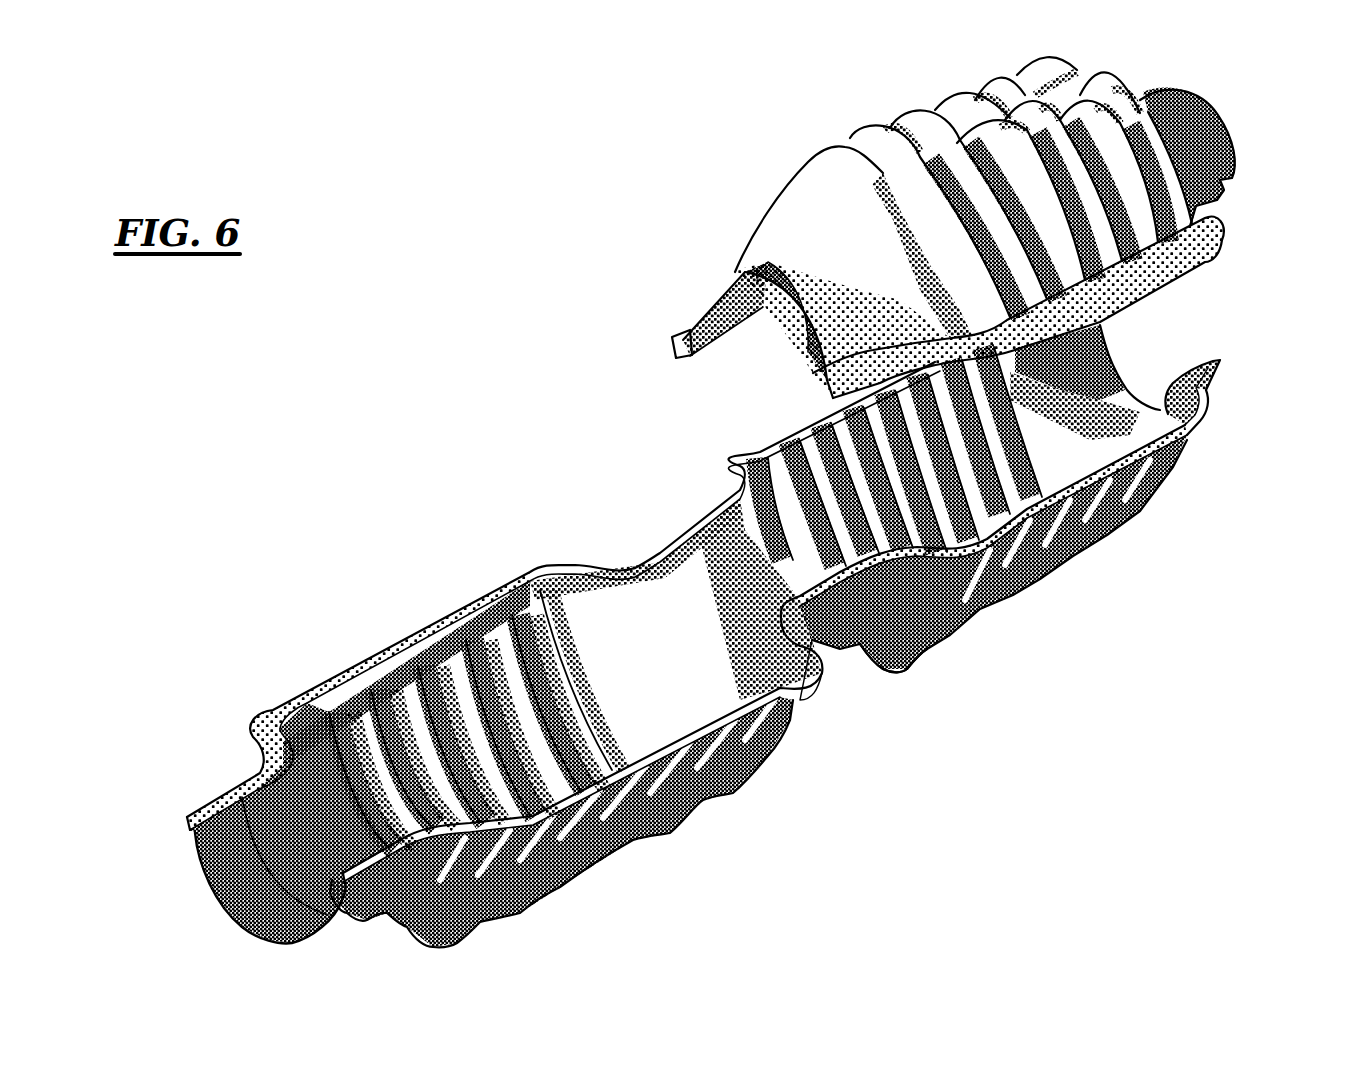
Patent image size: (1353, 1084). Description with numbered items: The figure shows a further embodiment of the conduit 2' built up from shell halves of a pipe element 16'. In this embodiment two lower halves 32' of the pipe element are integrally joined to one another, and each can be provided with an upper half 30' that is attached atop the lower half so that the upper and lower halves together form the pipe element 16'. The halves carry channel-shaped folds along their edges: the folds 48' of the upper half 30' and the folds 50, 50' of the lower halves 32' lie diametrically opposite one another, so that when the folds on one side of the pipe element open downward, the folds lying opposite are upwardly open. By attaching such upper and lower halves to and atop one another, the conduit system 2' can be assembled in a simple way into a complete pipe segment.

The conduit system 2' is at (753, 502).
The upper half of the pipe element 30' is at (931, 227).
The lower half of the pipe element 32' is at (753, 636).
The fold 48' is at (931, 307).
The fold 50 is at (358, 685).
The fold 50' is at (1059, 483).
The pipe element 16' is at (893, 711).